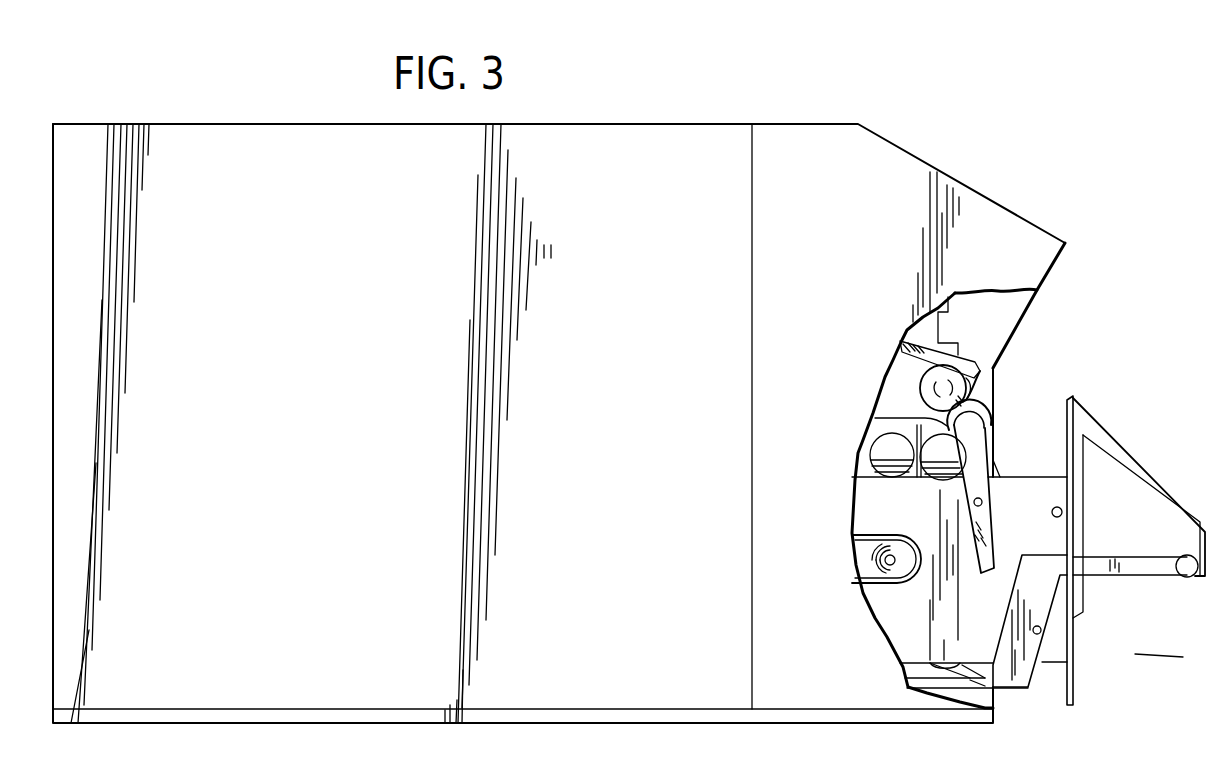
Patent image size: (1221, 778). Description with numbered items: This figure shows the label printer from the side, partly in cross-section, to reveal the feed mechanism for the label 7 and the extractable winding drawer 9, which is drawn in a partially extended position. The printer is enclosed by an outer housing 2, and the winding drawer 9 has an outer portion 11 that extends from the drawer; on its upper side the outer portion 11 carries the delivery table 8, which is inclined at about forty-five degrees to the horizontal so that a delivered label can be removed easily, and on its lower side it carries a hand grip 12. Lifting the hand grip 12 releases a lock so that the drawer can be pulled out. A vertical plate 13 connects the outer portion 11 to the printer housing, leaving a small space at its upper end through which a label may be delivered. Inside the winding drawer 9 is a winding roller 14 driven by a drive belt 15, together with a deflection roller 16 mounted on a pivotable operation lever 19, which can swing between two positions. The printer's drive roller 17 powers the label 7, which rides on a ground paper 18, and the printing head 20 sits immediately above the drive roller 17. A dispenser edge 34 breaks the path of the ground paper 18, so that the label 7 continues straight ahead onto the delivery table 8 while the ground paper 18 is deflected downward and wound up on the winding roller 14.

The outer housing 2 is at (645, 223).
The label 7 is at (962, 366).
The delivery table 8 is at (1165, 481).
The winding drawer 9 is at (1127, 653).
The outer portion 11 is at (1155, 453).
The hand grip 12 is at (1168, 577).
The vertical plate 13 is at (1075, 630).
The winding roller 14 is at (993, 477).
The drive belt 15 is at (875, 533).
The deflection roller 16 is at (989, 440).
The drive roller 17 is at (994, 381).
The ground paper 18 is at (994, 405).
The operation lever 19 is at (990, 487).
The printing head 20 is at (935, 327).
The dispenser edge 34 is at (960, 389).